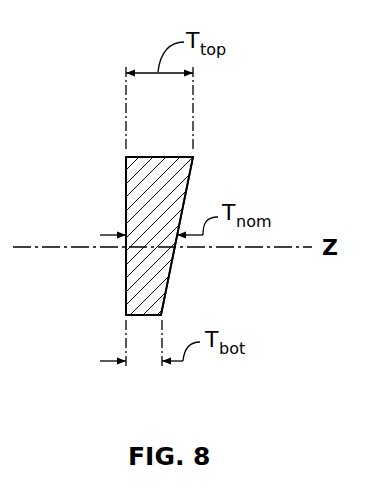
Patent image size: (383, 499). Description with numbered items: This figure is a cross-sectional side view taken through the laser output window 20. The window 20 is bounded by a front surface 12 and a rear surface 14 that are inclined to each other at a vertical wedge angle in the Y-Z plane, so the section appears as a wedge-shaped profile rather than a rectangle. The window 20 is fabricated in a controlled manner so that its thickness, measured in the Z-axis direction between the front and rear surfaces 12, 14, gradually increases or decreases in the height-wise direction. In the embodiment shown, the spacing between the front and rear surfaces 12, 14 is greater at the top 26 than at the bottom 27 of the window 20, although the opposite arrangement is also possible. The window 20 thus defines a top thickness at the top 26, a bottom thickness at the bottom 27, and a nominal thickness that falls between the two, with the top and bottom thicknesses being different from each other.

The front surface 12 is at (189, 193).
The rear surface 14 is at (120, 284).
The laser output window 20 is at (105, 183).
The top 26 is at (156, 149).
The bottom 27 is at (147, 326).